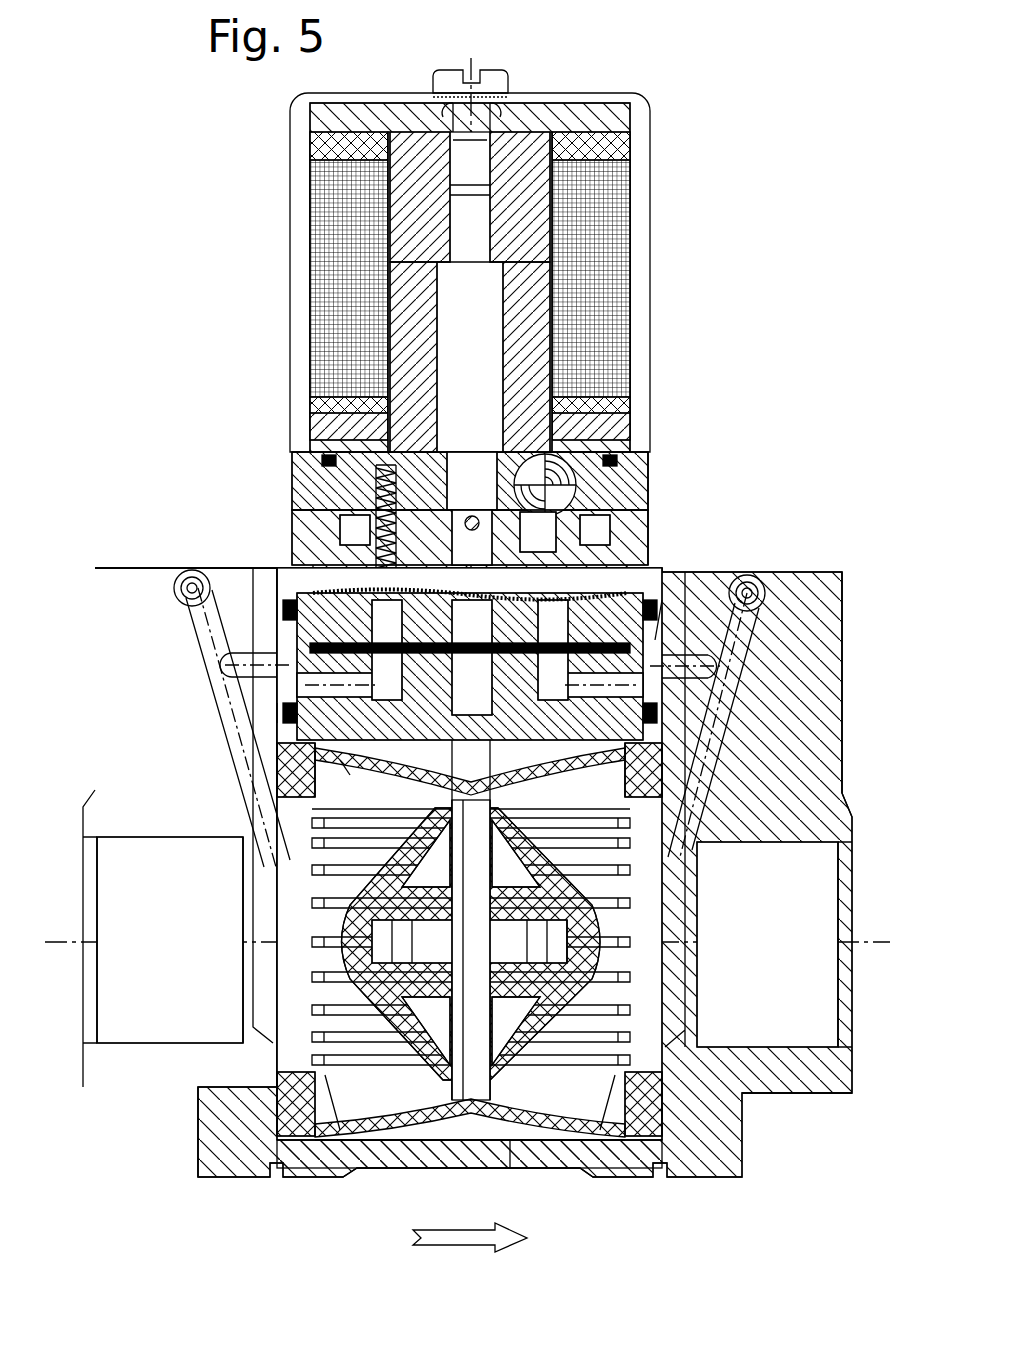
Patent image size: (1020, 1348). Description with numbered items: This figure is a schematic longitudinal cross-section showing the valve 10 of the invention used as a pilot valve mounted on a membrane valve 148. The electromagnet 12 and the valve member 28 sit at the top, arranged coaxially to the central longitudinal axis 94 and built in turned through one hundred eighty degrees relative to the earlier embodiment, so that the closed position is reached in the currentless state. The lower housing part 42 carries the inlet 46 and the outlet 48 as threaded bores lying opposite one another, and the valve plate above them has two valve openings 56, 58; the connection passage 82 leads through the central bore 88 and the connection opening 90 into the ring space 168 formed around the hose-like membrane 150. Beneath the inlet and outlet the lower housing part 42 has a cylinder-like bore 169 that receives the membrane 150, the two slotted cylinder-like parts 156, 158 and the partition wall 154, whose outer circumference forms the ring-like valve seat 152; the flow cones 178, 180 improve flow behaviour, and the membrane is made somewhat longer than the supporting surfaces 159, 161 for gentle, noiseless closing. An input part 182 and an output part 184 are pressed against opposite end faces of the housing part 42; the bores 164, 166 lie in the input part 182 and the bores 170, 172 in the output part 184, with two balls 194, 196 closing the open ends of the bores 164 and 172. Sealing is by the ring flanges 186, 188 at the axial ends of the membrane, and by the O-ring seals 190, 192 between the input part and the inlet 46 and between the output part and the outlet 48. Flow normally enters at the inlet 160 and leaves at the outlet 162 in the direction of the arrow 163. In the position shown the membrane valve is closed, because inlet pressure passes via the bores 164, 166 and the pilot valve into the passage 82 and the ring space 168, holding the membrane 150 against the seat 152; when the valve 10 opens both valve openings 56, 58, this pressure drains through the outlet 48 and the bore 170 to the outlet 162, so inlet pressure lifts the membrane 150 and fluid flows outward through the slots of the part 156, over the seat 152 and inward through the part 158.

The valve 10 is at (656, 458).
The electromagnet 12 is at (636, 205).
The valve member 28 is at (575, 510).
The lower housing part 42 is at (292, 560).
The inlet 46 is at (296, 598).
The outlet 48 is at (690, 585).
The valve opening 56 is at (312, 465).
The valve opening 58 is at (615, 548).
The connection passage 82 is at (322, 456).
The bore 88 is at (306, 522).
The outlet bore 90 is at (455, 778).
The central longitudinal axis 94 is at (478, 58).
The membrane valve 148 is at (212, 1184).
The membrane 150 is at (392, 1140).
The valve seat 152 is at (492, 1100).
The partition wall 154 is at (492, 788).
The slotted cylinder-like part 156 is at (290, 915).
The slotted cylinder-like part 158 is at (648, 912).
The surface 159 is at (355, 772).
The inlet 160 is at (118, 988).
The surface 161 is at (570, 775).
The outlet 162 is at (815, 993).
The flow direction arrow 163 is at (465, 1252).
The bore 164 is at (218, 668).
The bore 166 is at (262, 575).
The ring space 168 is at (400, 772).
The cylinder-like bore 169 is at (515, 1140).
The bore 170 is at (702, 655).
The bore 172 is at (772, 640).
The flow cone 178 is at (378, 948).
The flow cone 180 is at (598, 955).
The input part 182 is at (100, 592).
The output part 184 is at (790, 1082).
The ring flange 186 is at (245, 830).
The ring flange 188 is at (700, 830).
The O-ring seal 190 is at (280, 713).
The O-ring seal 192 is at (656, 600).
The ball 194 is at (190, 572).
The ball 196 is at (752, 578).